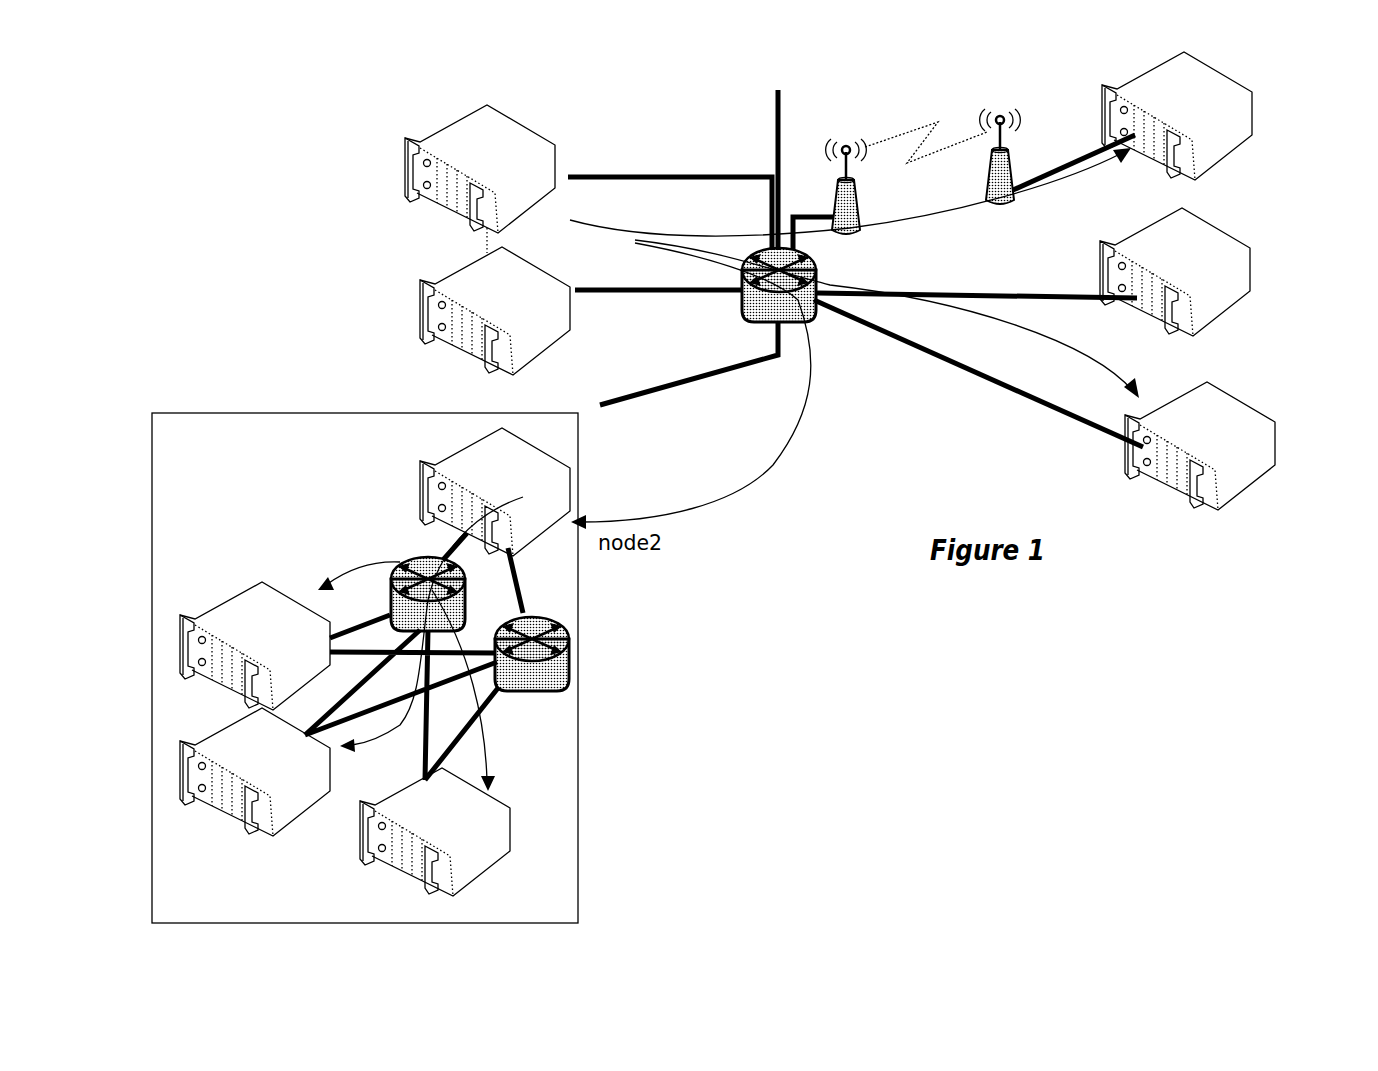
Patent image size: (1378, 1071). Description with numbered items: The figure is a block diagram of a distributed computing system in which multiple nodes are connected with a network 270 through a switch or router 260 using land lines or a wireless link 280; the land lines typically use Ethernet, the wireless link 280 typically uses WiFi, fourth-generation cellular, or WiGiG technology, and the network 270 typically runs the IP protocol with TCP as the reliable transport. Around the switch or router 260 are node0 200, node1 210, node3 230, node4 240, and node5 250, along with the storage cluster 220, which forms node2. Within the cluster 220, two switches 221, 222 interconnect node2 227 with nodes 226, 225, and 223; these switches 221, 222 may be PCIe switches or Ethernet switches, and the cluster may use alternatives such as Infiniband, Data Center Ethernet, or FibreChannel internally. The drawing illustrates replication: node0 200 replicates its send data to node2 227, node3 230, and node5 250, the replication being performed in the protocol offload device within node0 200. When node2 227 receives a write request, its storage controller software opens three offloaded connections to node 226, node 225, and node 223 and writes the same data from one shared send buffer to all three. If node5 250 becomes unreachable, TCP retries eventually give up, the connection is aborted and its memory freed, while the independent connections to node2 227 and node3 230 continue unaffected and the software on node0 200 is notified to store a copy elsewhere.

The node0 200 is at (440, 159).
The node1 210 is at (454, 298).
The cluster 220 is at (365, 626).
The switch 221 is at (401, 575).
The switch 222 is at (536, 679).
The node 223 is at (457, 832).
The node 225 is at (250, 780).
The node 226 is at (254, 625).
The node2 227 is at (468, 492).
The node3 230 is at (1225, 116).
The node4 240 is at (1226, 272).
The node5 250 is at (1237, 444).
The switch or router 260 is at (745, 263).
The network 270 is at (760, 137).
The wireless link 280 is at (923, 132).